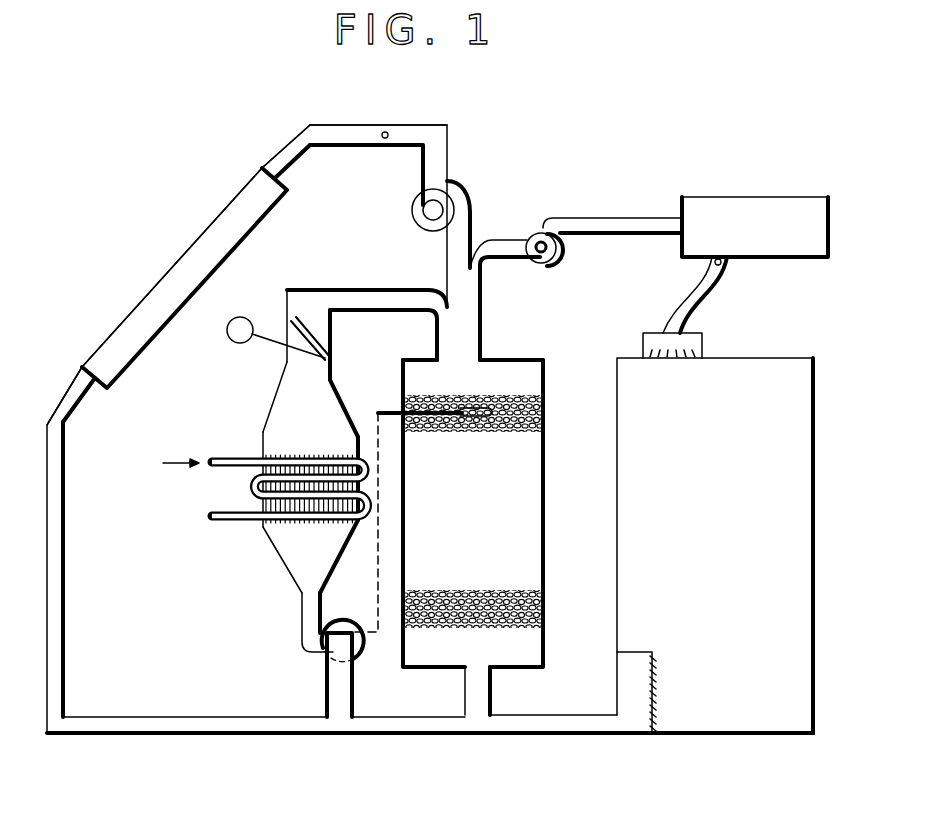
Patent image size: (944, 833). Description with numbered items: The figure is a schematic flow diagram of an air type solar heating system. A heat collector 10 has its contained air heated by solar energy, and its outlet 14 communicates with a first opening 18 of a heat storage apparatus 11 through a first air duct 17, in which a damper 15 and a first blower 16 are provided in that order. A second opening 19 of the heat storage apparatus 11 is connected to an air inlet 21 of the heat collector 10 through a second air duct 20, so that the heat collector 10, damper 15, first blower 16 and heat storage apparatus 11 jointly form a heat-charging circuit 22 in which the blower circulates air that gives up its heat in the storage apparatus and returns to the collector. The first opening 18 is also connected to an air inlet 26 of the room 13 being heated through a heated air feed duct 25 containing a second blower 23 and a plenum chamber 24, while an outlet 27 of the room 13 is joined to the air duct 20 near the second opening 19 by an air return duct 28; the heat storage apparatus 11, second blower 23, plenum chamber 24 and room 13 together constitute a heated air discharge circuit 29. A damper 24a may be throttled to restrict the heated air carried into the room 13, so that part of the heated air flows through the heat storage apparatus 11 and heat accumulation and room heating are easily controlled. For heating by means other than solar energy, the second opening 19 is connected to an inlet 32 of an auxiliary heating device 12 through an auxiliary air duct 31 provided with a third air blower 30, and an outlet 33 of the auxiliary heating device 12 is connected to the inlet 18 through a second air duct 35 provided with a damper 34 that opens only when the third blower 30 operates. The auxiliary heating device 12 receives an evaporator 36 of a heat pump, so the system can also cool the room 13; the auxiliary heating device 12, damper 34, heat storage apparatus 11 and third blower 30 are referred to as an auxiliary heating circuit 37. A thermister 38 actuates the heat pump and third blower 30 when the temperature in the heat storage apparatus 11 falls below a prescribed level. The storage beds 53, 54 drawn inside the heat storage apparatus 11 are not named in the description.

The heat collector 10 is at (124, 265).
The heat storage apparatus 11 is at (455, 522).
The auxiliary heating device 12 is at (222, 452).
The room 13 is at (700, 522).
The outlet 14 is at (270, 168).
The damper 15 is at (385, 131).
The first blower 16 is at (428, 218).
The first air duct 17 is at (450, 153).
The first opening 18 is at (460, 357).
The second opening 19 is at (477, 667).
The second air duct 20 is at (113, 717).
The air inlet 21 is at (92, 380).
The heat-charging circuit 22 is at (131, 552).
The second blower 23 is at (540, 245).
The plenum chamber 24 is at (733, 239).
The damper 24a is at (724, 268).
The heated air feed duct 25 is at (627, 218).
The air inlet 26 is at (683, 358).
The outlet 27 is at (658, 703).
The air return duct 28 is at (598, 733).
The heated air discharge circuit 29 is at (567, 522).
The third air blower 30 is at (333, 650).
The auxiliary air duct 31 is at (325, 695).
The inlet 32 is at (305, 590).
The outlet 33 is at (305, 381).
The damper 34 is at (317, 336).
The second air duct 35 is at (330, 290).
The evaporator 36 is at (297, 530).
The auxiliary heating circuit 37 is at (354, 399).
The thermister 38 is at (473, 417).
The upper gravel bed 53 is at (527, 395).
The lower gravel bed 54 is at (510, 632).